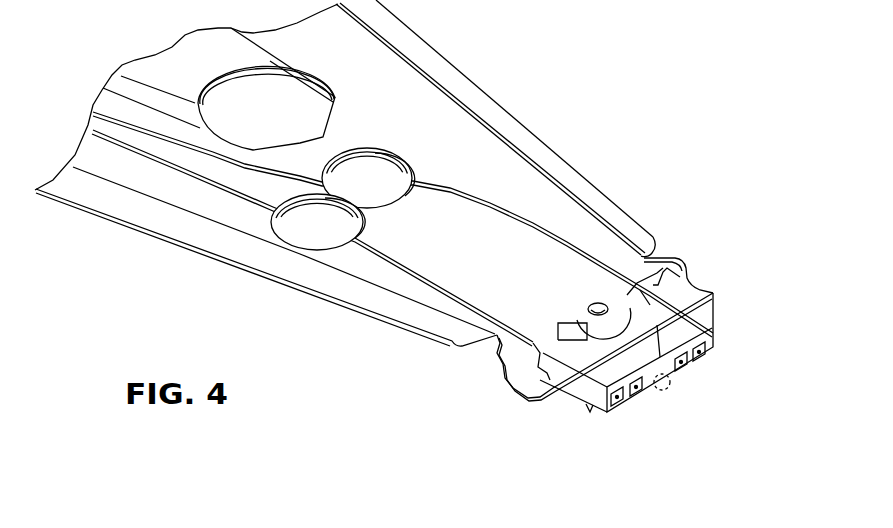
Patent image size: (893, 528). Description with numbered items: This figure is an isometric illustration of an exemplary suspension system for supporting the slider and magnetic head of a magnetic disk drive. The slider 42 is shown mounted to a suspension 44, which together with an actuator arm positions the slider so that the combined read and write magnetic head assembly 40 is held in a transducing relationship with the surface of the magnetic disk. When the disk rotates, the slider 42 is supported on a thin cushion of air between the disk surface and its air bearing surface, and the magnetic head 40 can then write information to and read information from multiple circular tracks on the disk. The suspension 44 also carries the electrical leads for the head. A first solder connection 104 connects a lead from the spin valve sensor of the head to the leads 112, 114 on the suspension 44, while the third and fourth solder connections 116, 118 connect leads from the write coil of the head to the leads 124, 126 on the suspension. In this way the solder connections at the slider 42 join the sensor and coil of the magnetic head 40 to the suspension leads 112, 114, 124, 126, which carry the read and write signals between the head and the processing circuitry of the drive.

The combined read and write magnetic head assembly 40 is at (672, 392).
The slider 42 is at (557, 402).
The suspension 44 is at (513, 110).
The first solder connection 104 is at (603, 413).
The lead 112 is at (390, 262).
The lead 114 is at (568, 250).
The third solder connection 116 is at (637, 394).
The fourth solder connection 118 is at (683, 368).
The lead 124 is at (430, 273).
The lead 126 is at (490, 212).